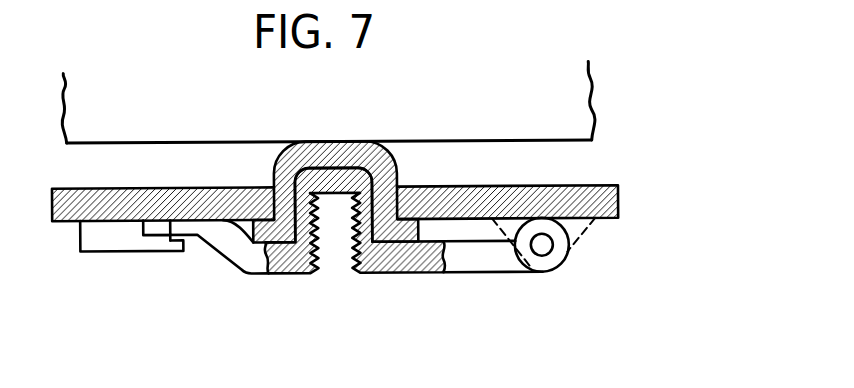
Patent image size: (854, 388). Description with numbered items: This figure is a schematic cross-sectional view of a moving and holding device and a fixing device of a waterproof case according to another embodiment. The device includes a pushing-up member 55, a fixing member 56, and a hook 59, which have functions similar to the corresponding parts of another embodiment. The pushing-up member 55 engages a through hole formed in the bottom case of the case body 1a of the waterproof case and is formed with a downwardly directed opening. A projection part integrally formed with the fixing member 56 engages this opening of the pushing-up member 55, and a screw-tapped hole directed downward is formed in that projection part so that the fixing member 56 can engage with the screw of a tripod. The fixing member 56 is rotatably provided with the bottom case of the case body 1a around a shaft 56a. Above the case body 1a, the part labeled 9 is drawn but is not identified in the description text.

The cover 9 is at (573, 100).
The case body 1a is at (608, 210).
The pushing-up member 55 is at (351, 152).
The fixing member 56 is at (407, 262).
The shaft 56a is at (553, 251).
The hook 59 is at (143, 243).